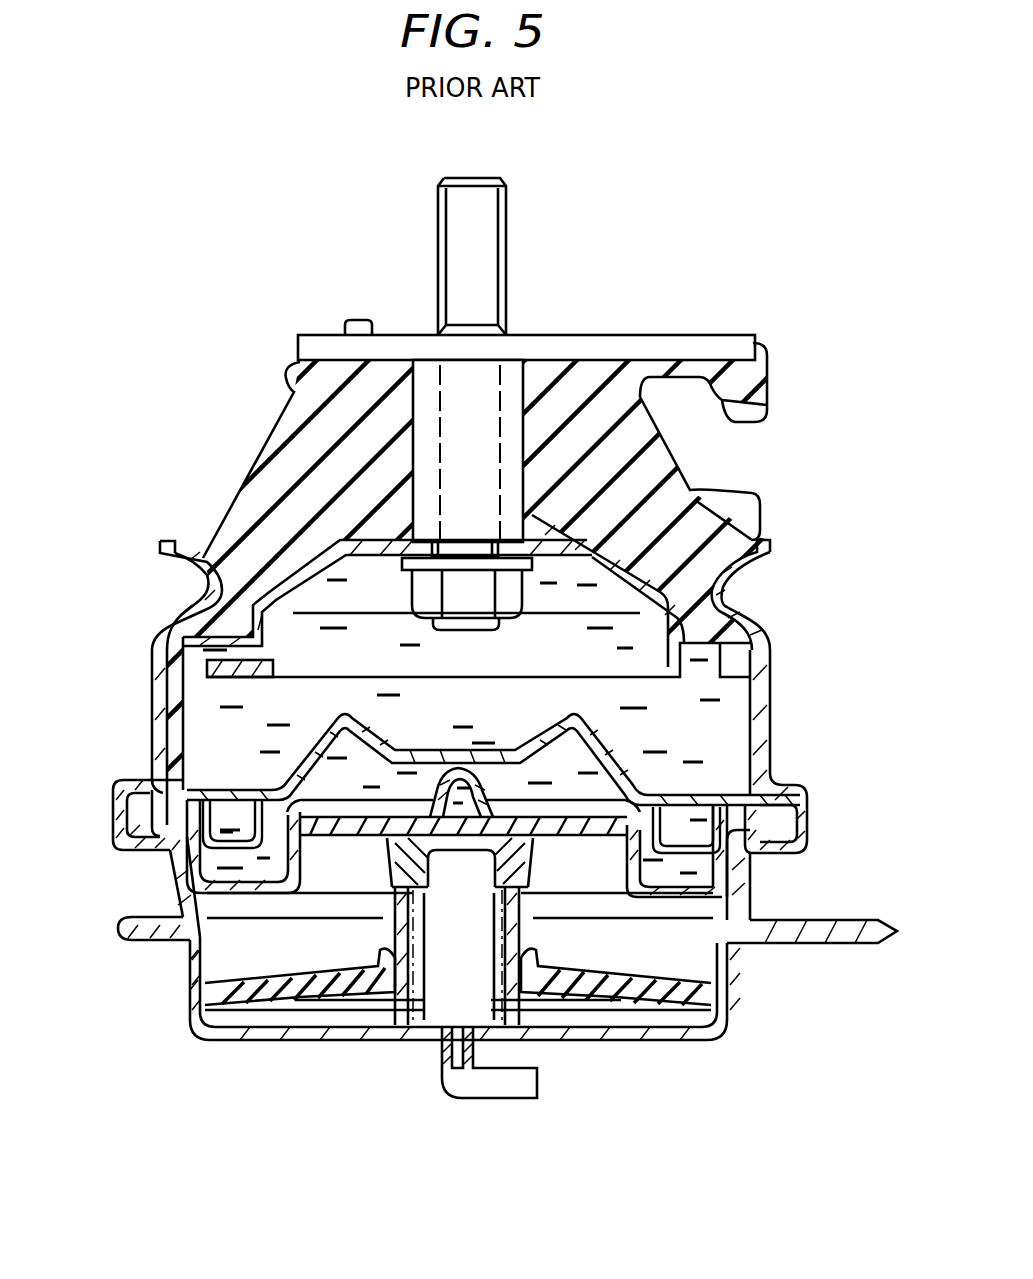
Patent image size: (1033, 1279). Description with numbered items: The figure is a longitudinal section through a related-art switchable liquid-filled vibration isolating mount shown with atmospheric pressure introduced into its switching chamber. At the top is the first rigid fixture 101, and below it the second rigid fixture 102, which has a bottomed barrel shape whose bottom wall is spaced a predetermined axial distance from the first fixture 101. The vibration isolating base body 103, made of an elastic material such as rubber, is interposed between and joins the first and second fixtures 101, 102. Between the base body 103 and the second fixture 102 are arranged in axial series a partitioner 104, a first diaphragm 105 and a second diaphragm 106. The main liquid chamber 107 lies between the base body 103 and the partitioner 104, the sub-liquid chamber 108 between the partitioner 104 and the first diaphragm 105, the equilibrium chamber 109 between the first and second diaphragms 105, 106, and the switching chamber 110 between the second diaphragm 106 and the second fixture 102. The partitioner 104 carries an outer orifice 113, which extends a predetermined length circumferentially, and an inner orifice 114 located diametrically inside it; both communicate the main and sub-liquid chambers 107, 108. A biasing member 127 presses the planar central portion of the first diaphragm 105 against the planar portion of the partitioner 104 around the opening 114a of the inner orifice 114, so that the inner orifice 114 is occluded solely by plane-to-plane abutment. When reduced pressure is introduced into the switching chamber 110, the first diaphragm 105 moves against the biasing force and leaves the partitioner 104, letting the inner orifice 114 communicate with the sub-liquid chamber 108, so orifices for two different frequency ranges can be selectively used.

The first rigid fixture 101 is at (605, 335).
The second rigid fixture 102 is at (190, 1000).
The vibration isolating base body 103 is at (300, 413).
The partitioner 104 is at (248, 783).
The first diaphragm 105 is at (252, 897).
The second diaphragm 106 is at (640, 1000).
The main liquid chamber 107 is at (687, 713).
The sub-liquid chamber 108 is at (653, 793).
The equilibrium chamber 109 is at (667, 940).
The switching chamber 110 is at (320, 1017).
The outer orifice 113 is at (233, 822).
The inner orifice 114 is at (360, 753).
The opening of the inner orifice 114a is at (488, 795).
The biasing member 127 is at (415, 1000).